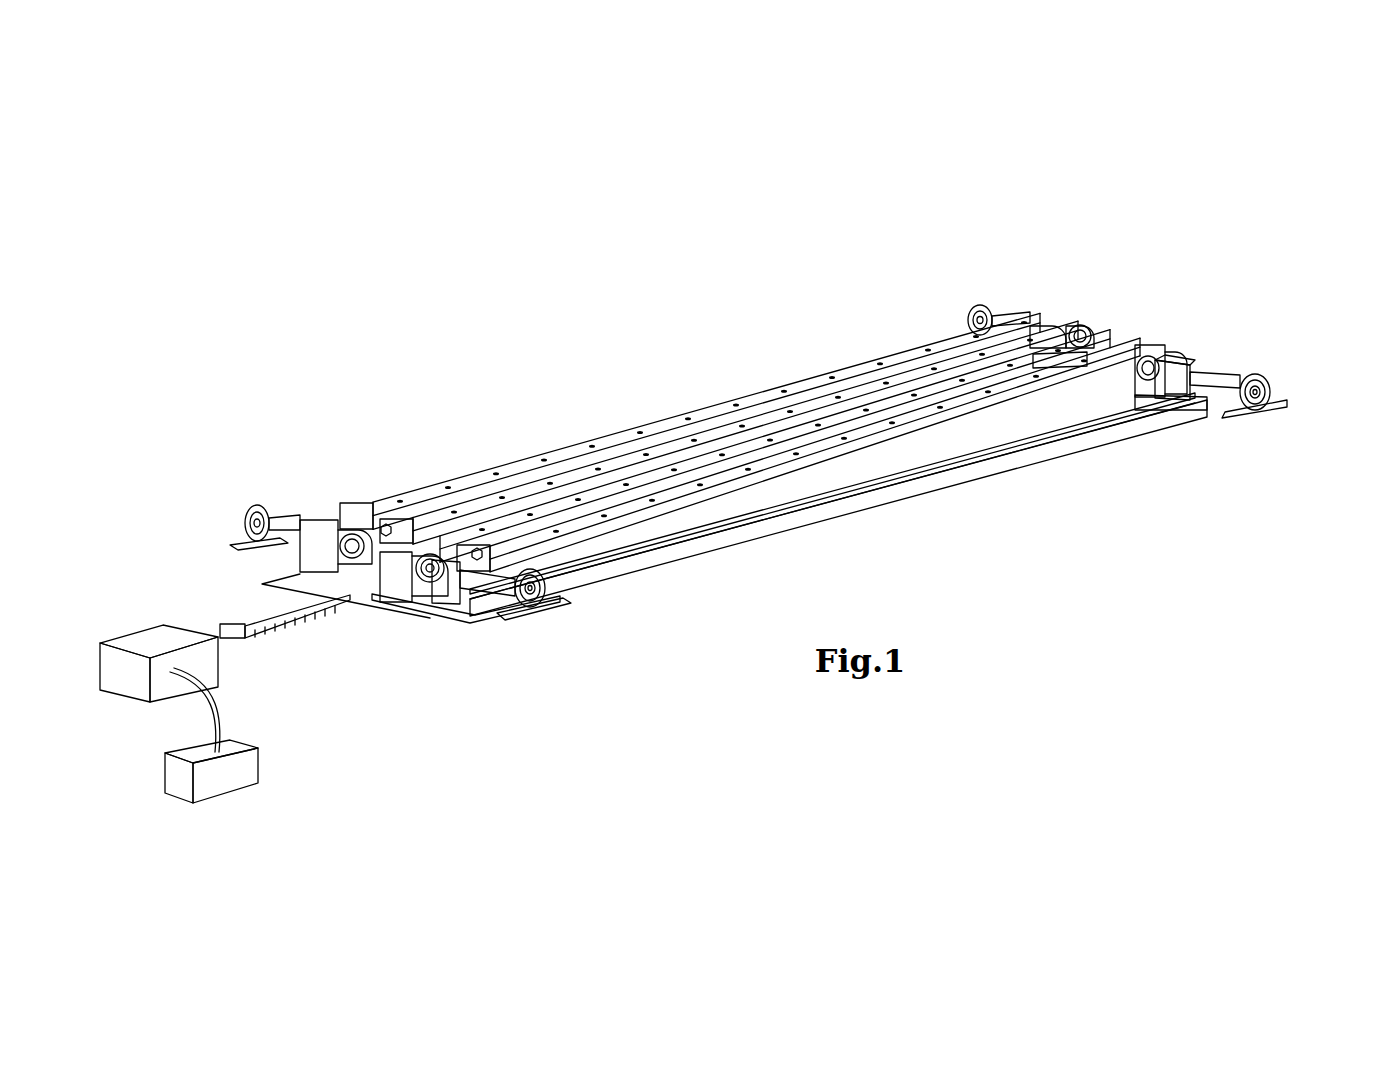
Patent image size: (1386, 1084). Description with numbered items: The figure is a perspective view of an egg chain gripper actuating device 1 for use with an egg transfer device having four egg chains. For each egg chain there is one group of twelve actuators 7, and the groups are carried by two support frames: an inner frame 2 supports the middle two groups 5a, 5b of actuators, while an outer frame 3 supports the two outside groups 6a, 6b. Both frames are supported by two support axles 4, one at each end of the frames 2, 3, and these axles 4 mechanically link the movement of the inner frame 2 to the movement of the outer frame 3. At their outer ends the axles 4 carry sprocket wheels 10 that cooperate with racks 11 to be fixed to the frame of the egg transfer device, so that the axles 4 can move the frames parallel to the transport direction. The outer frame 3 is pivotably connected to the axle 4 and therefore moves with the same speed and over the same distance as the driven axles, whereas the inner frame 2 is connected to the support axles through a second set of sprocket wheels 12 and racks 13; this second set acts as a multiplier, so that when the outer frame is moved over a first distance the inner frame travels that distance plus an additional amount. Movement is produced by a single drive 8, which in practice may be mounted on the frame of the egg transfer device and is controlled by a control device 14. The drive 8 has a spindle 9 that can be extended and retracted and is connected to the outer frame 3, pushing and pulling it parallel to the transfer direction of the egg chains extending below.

The egg chain gripper actuating device 1 is at (832, 368).
The frame 2 is at (288, 580).
The frame 3 is at (413, 612).
The support axle 4 is at (840, 468).
The group of actuators 5a is at (1001, 351).
The group of actuators 5b is at (1123, 368).
The group of actuators 6a is at (1080, 317).
The group of actuators 6b is at (1200, 344).
The actuator 7 is at (917, 354).
The drive 8 is at (123, 678).
The spindle 9 is at (260, 613).
The sprocket wheel 10 is at (247, 508).
The rack 11 is at (233, 542).
The sprocket wheel 12 is at (1088, 315).
The rack 13 is at (1041, 368).
The control device 14 is at (177, 780).